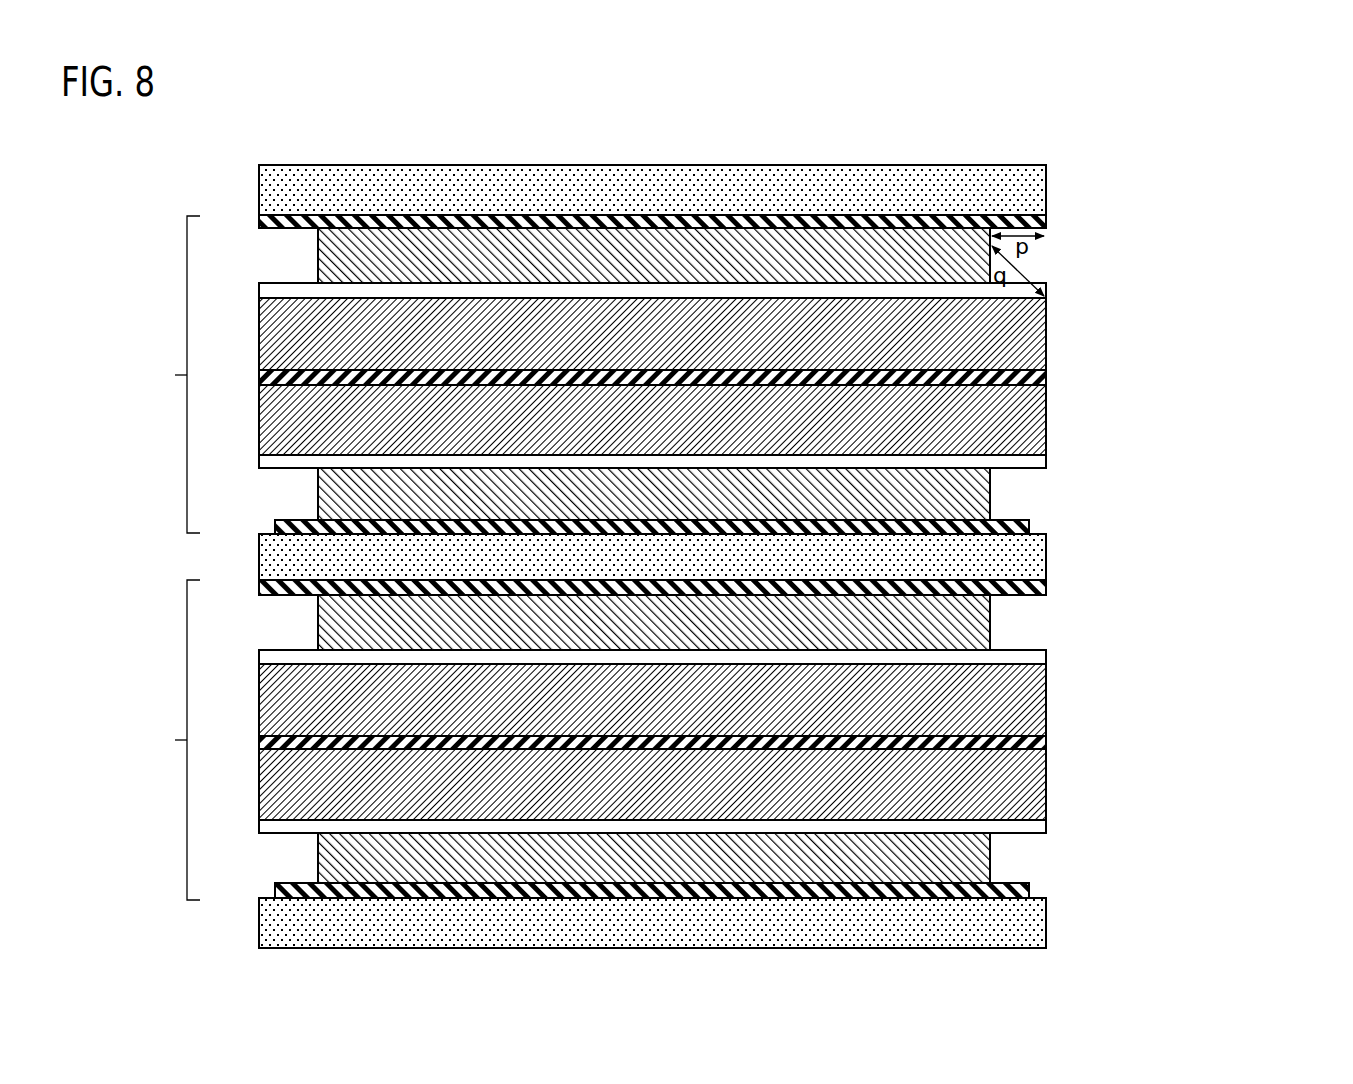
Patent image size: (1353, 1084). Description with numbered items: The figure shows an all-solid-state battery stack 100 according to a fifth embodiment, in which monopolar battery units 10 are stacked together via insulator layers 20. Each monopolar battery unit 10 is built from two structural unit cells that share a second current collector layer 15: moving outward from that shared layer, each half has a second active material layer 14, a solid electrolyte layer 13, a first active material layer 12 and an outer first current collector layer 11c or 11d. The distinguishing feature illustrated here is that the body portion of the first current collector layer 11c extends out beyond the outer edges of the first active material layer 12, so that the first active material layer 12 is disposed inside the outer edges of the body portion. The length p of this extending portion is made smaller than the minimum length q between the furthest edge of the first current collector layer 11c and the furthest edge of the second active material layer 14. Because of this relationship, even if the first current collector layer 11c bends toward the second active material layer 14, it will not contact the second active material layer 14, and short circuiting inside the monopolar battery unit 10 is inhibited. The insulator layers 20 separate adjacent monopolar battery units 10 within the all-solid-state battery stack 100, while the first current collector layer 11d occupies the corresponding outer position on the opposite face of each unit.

The all-solid-state battery stack 100 is at (1190, 411).
The monopolar battery unit 10 is at (168, 558).
The first current collector layer 11c is at (1040, 213).
The lower electrode layer 11d is at (1025, 520).
The first active material layer 12 is at (330, 258).
The solid electrolyte layer 13 is at (1012, 303).
The second active material layer 14 is at (1012, 330).
The second current collector layer 15 is at (1040, 370).
The insulator layer 20 is at (1010, 181).